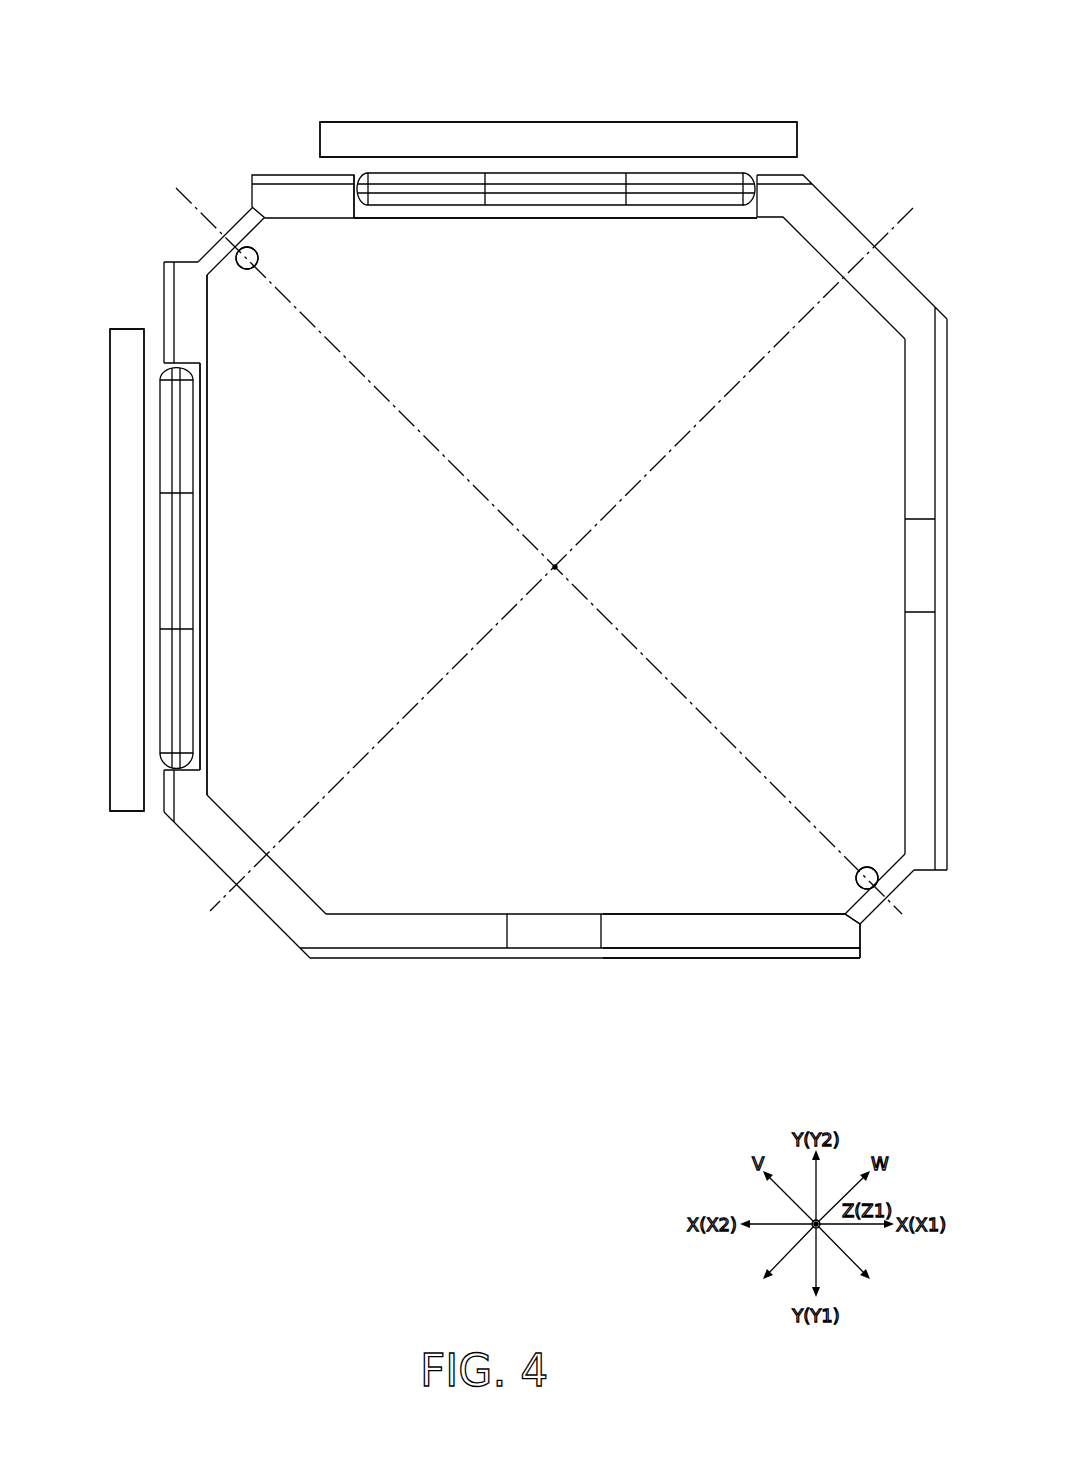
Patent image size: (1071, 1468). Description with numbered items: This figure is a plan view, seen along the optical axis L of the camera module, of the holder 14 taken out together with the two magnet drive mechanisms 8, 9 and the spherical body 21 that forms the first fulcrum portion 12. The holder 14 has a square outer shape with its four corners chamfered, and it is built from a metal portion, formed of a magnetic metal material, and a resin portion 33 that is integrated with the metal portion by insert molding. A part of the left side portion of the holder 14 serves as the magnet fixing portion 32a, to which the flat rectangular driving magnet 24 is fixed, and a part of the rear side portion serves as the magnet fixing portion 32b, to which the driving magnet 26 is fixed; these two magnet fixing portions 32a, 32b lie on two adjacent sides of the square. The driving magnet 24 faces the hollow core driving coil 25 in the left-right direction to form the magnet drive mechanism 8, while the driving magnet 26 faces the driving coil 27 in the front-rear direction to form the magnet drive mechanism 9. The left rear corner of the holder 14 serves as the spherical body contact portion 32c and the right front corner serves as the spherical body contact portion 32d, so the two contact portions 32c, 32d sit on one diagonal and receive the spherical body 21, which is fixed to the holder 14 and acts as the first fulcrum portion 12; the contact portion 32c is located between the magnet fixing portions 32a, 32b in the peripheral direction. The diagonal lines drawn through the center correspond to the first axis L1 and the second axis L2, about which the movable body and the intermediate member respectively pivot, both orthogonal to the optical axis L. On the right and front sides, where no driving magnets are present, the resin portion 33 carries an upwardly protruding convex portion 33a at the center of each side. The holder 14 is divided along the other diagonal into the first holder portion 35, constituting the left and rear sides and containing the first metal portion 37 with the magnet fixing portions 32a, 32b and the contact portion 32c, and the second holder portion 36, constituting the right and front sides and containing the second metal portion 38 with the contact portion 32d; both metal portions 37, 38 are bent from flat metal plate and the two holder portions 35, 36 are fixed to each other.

The magnet drive mechanism 8 is at (86, 565).
The magnet drive mechanism 9 is at (537, 84).
The first fulcrum portion 12 is at (245, 269).
The spherical body 21 is at (557, 568).
The holder 14 is at (354, 951).
The driving magnet 24 is at (160, 440).
The driving coil 25 is at (110, 706).
The driving magnet 26 is at (412, 172).
The driving coil 27 is at (735, 121).
The magnet fixing portion 32a is at (207, 560).
The magnet fixing portion 32b is at (555, 219).
The spherical body contact portion 32c is at (240, 221).
The spherical body contact portion 32d is at (868, 918).
The resin portion 33 is at (430, 958).
The convex portion 33a is at (550, 914).
The first holder portion 35 is at (271, 175).
The second holder portion 36 is at (723, 958).
The first metal portion 37 is at (207, 697).
The second metal portion 38 is at (899, 878).
The optical axis L is at (557, 563).
The first axis L1 is at (372, 350).
The second axis L2 is at (762, 360).